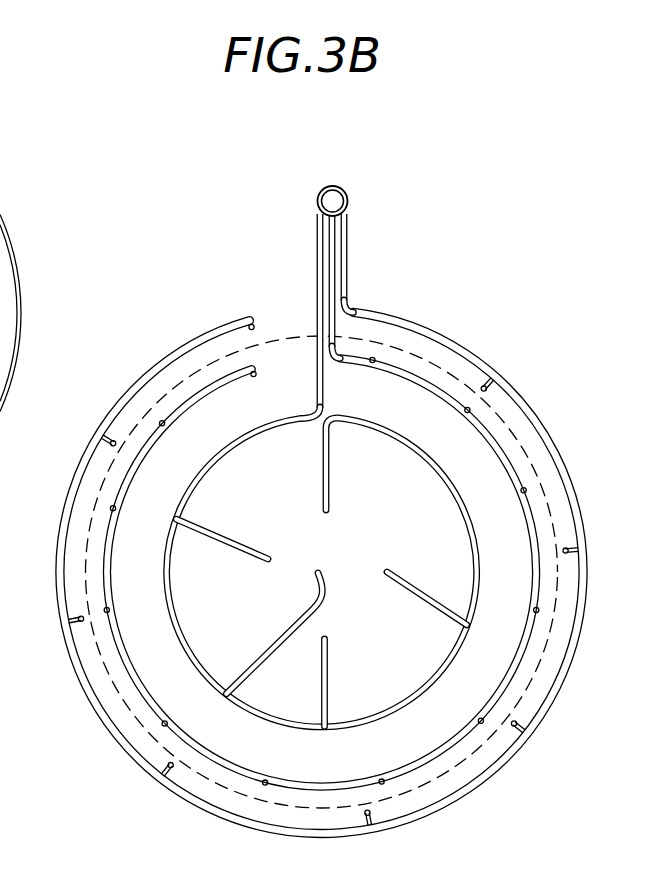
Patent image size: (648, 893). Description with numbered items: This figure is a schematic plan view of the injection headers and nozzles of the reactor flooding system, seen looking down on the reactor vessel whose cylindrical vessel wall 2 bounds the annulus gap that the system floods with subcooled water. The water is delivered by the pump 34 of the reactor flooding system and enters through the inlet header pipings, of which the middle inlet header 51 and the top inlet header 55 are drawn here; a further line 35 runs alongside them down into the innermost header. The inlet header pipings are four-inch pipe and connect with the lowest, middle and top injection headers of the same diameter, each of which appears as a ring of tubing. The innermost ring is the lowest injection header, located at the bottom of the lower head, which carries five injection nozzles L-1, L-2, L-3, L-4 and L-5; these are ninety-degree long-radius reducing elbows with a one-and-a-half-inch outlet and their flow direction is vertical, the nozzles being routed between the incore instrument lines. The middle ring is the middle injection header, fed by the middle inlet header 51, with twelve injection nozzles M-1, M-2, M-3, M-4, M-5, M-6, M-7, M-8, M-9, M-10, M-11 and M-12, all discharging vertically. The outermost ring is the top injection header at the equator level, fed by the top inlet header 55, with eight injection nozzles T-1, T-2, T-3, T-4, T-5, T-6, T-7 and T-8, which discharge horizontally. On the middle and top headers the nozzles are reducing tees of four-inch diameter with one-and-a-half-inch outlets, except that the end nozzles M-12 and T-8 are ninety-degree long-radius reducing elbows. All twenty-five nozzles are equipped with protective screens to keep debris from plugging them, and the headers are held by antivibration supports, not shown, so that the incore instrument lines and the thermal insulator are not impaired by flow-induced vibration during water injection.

The cylindrical vessel wall 2 is at (196, 373).
The pump 34 is at (348, 190).
The inner channel feed tube 35 is at (318, 298).
The middle inlet header 51 is at (340, 297).
The top inlet header 55 is at (350, 236).
The injection nozzle T-1 is at (509, 368).
The injection nozzle T-2 is at (595, 551).
The injection nozzle T-3 is at (547, 739).
The injection nozzle T-4 is at (383, 836).
The injection nozzle T-5 is at (138, 784).
The injection nozzle T-6 is at (50, 632).
The injection nozzle T-7 is at (84, 433).
The injection nozzle T-8 is at (233, 310).
The injection nozzle M-1 is at (373, 379).
The injection nozzle M-2 is at (446, 423).
The injection nozzle M-3 is at (501, 501).
The injection nozzle M-4 is at (511, 607).
The injection nozzle M-5 is at (461, 706).
The injection nozzle M-6 is at (365, 762).
The injection nozzle M-7 is at (265, 762).
The injection nozzle M-8 is at (181, 706).
The injection nozzle M-9 is at (133, 607).
The injection nozzle M-10 is at (139, 519).
The injection nozzle M-11 is at (189, 436).
The injection nozzle M-12 is at (260, 395).
The injection nozzle L-1 is at (222, 556).
The injection nozzle L-2 is at (280, 615).
The injection nozzle L-3 is at (351, 679).
The injection nozzle L-4 is at (427, 582).
The injection nozzle L-5 is at (322, 567).